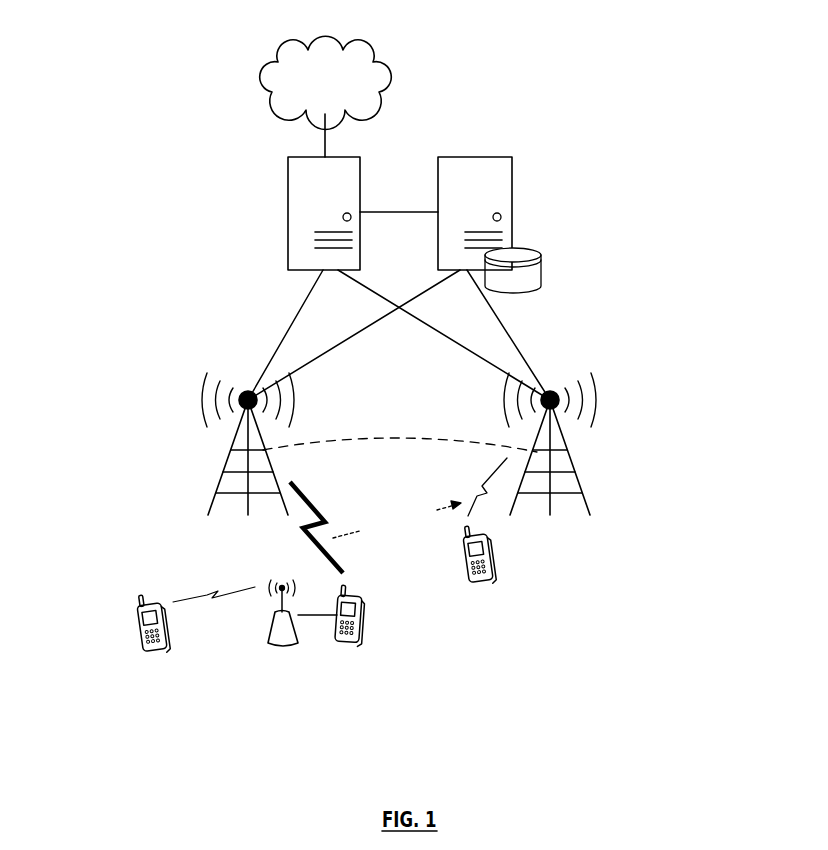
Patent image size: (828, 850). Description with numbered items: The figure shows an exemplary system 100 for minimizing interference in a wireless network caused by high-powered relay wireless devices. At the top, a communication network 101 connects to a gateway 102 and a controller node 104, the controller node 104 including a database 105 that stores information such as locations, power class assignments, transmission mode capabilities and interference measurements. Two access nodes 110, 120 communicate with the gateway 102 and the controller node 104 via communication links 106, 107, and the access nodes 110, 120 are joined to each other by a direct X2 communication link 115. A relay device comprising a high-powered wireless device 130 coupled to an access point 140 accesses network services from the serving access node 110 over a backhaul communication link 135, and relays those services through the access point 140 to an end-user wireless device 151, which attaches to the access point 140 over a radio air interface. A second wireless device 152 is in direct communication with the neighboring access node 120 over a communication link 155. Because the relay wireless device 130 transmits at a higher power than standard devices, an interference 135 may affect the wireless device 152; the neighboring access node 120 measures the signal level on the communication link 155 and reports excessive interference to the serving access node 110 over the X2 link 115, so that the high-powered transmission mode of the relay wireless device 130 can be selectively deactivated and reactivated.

The system 100 is at (456, 50).
The communication network 101 is at (338, 89).
The gateway 102 is at (288, 185).
The controller node 104 is at (512, 195).
The database 105 is at (545, 268).
The communication link 106 is at (383, 300).
The communication link 107 is at (350, 335).
The access node 110 is at (228, 485).
The X2 communication link 115 is at (430, 440).
The access node 120 is at (575, 480).
The high-powered wireless device 130 is at (369, 615).
The communication link 135 is at (305, 535).
The access point 140 is at (268, 637).
The wireless device 151 is at (133, 612).
The wireless device 152 is at (497, 549).
The communication link 155 is at (485, 491).